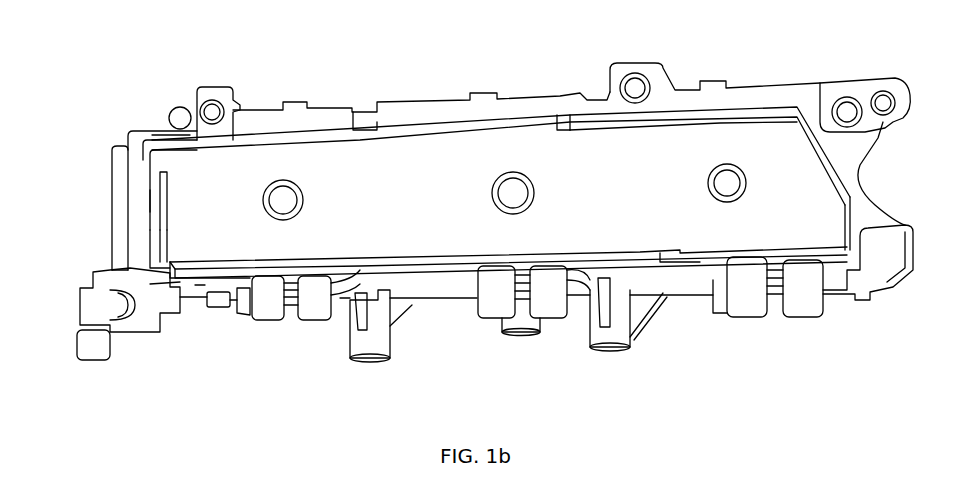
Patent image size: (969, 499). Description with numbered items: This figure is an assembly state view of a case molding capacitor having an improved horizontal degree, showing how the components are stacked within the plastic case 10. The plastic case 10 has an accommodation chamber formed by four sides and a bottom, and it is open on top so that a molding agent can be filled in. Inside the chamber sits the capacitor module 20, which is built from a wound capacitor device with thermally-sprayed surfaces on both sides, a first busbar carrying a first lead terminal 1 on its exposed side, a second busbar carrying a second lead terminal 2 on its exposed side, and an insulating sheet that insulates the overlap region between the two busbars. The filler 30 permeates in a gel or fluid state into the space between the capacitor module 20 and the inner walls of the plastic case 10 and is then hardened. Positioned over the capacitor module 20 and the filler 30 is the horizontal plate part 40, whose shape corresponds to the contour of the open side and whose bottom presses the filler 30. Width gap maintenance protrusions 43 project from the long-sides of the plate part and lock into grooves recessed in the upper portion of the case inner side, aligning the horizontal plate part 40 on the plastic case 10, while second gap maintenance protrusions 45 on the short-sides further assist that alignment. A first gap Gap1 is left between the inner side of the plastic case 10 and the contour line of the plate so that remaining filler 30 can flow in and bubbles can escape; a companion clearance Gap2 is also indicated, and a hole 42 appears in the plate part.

The plastic case 10 is at (412, 305).
The capacitor module 20 is at (813, 363).
The first lead terminal 1 is at (750, 303).
The second lead terminal 2 is at (804, 303).
The filler 30 is at (283, 200).
The horizontal plate part 40 is at (366, 187).
The hole 42 is at (727, 183).
The width gap maintenance protrusions 43 is at (557, 122).
The second gap maintenance protrusions 45 is at (157, 150).
The first gap Gap1 is at (200, 268).
The second gap Gap2 is at (147, 201).